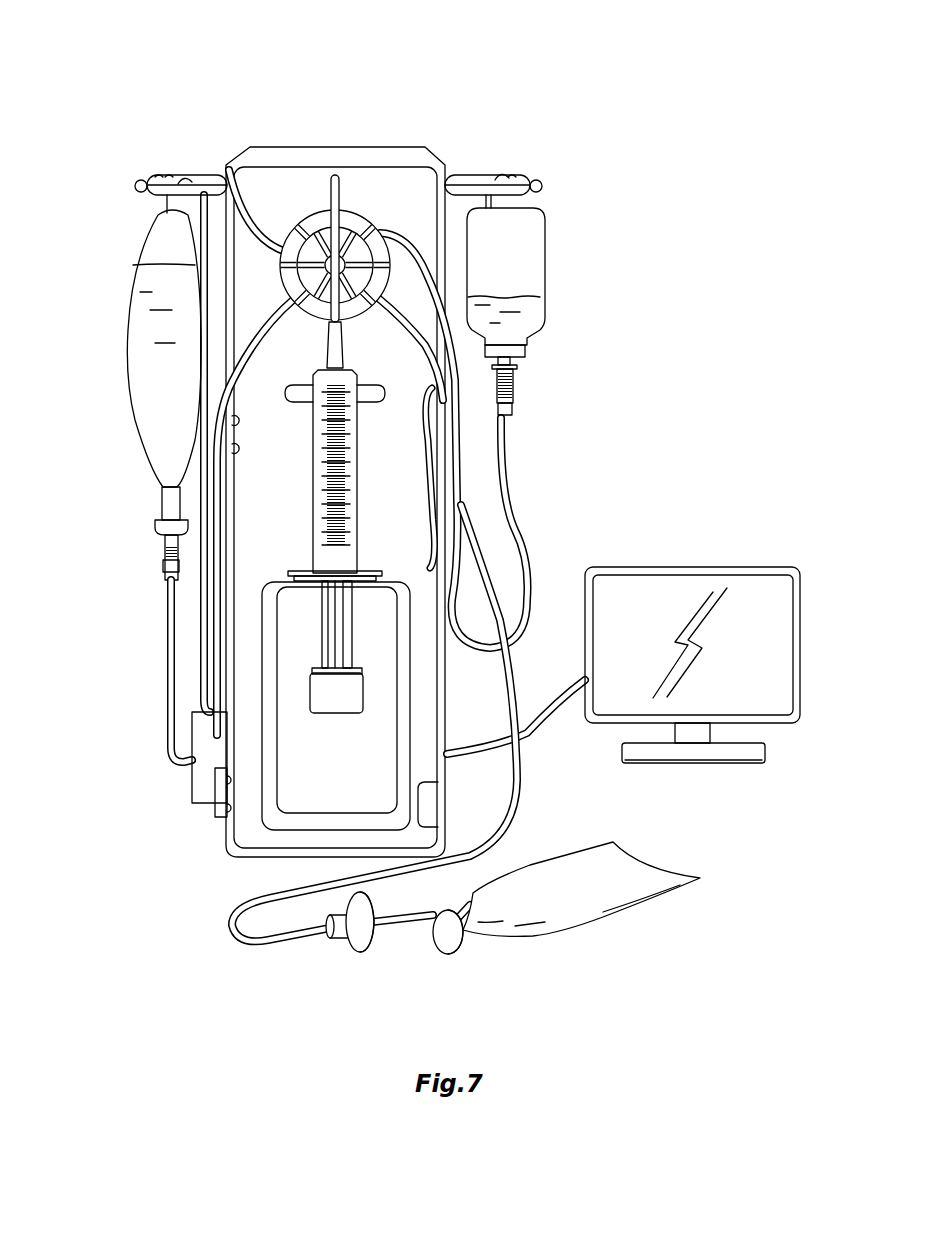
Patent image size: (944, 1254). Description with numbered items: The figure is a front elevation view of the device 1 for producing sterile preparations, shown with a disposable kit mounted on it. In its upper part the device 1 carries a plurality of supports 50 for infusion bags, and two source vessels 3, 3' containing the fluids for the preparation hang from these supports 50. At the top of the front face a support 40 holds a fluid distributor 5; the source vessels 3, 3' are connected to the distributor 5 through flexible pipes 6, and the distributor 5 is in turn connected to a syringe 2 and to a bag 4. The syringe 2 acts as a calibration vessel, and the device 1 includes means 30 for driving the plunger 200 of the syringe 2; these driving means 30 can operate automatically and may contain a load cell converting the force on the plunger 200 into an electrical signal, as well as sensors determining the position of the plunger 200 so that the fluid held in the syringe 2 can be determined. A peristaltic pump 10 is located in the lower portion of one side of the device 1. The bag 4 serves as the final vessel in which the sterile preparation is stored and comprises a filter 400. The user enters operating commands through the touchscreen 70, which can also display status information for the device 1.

The device for producing sterile preparations 1 is at (316, 114).
The supports for infusion bags 50 is at (197, 180).
The fluid distributor 5 is at (340, 258).
The support for fluid distributor 40 is at (283, 253).
The source vessel 3 is at (129, 486).
The source vessel 3' is at (533, 311).
The syringe 2 is at (327, 560).
The plunger 200 is at (327, 628).
The means for driving the plunger 30 is at (327, 688).
The peristaltic pump 10 is at (205, 777).
The flexible pipes 6 is at (527, 750).
The touchscreen 70 is at (747, 692).
The filter 400 is at (356, 925).
The bag 4 is at (573, 903).